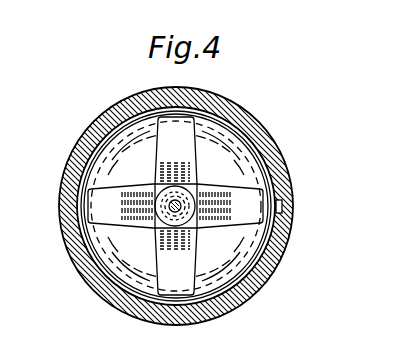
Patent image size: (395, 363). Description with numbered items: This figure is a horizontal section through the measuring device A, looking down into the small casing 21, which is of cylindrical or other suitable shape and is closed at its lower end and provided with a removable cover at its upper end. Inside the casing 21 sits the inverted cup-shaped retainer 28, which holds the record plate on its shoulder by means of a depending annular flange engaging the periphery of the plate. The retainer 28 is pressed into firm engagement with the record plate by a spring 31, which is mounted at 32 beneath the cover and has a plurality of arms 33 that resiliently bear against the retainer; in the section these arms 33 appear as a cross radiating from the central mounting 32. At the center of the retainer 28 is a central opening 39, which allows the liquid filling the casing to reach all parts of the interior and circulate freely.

The measuring device A is at (70, 173).
The casing 21 is at (267, 267).
The retainer 28 is at (255, 175).
The spring 31 is at (200, 185).
The spring mounting 32 is at (182, 200).
The arms 33 is at (181, 137).
The central opening 39 is at (166, 218).